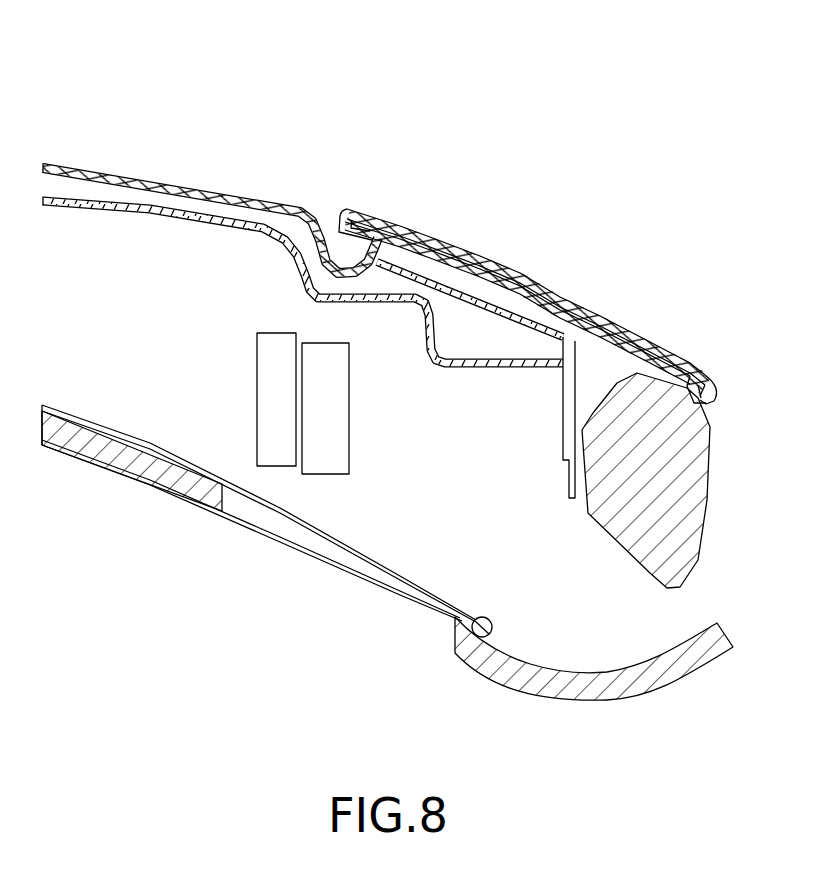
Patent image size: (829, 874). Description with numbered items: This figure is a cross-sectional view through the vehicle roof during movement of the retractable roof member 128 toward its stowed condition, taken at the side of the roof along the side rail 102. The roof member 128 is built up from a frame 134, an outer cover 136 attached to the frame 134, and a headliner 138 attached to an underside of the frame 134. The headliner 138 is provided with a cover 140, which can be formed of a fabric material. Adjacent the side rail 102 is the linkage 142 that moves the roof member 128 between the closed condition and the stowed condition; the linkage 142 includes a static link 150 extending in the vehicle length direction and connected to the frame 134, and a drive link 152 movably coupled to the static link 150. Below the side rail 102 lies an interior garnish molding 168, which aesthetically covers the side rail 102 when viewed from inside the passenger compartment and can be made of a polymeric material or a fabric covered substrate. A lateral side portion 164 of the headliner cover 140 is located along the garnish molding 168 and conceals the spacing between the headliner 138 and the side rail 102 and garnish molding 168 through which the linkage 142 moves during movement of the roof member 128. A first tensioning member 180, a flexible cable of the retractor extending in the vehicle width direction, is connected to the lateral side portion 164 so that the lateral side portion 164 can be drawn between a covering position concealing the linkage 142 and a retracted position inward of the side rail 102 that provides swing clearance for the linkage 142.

The side rail 102 is at (653, 347).
The retractable roof member 128 is at (98, 125).
The frame 134 is at (123, 207).
The outer cover 136 is at (170, 183).
The headliner 138 is at (130, 460).
The headliner cover 140 is at (257, 530).
The linkage 142 is at (205, 378).
The static link 150 is at (340, 432).
The drive link 152 is at (267, 406).
The lateral side portion 164 is at (350, 570).
The interior garnish molding 168 is at (633, 697).
The first tensioning member 180 is at (357, 544).